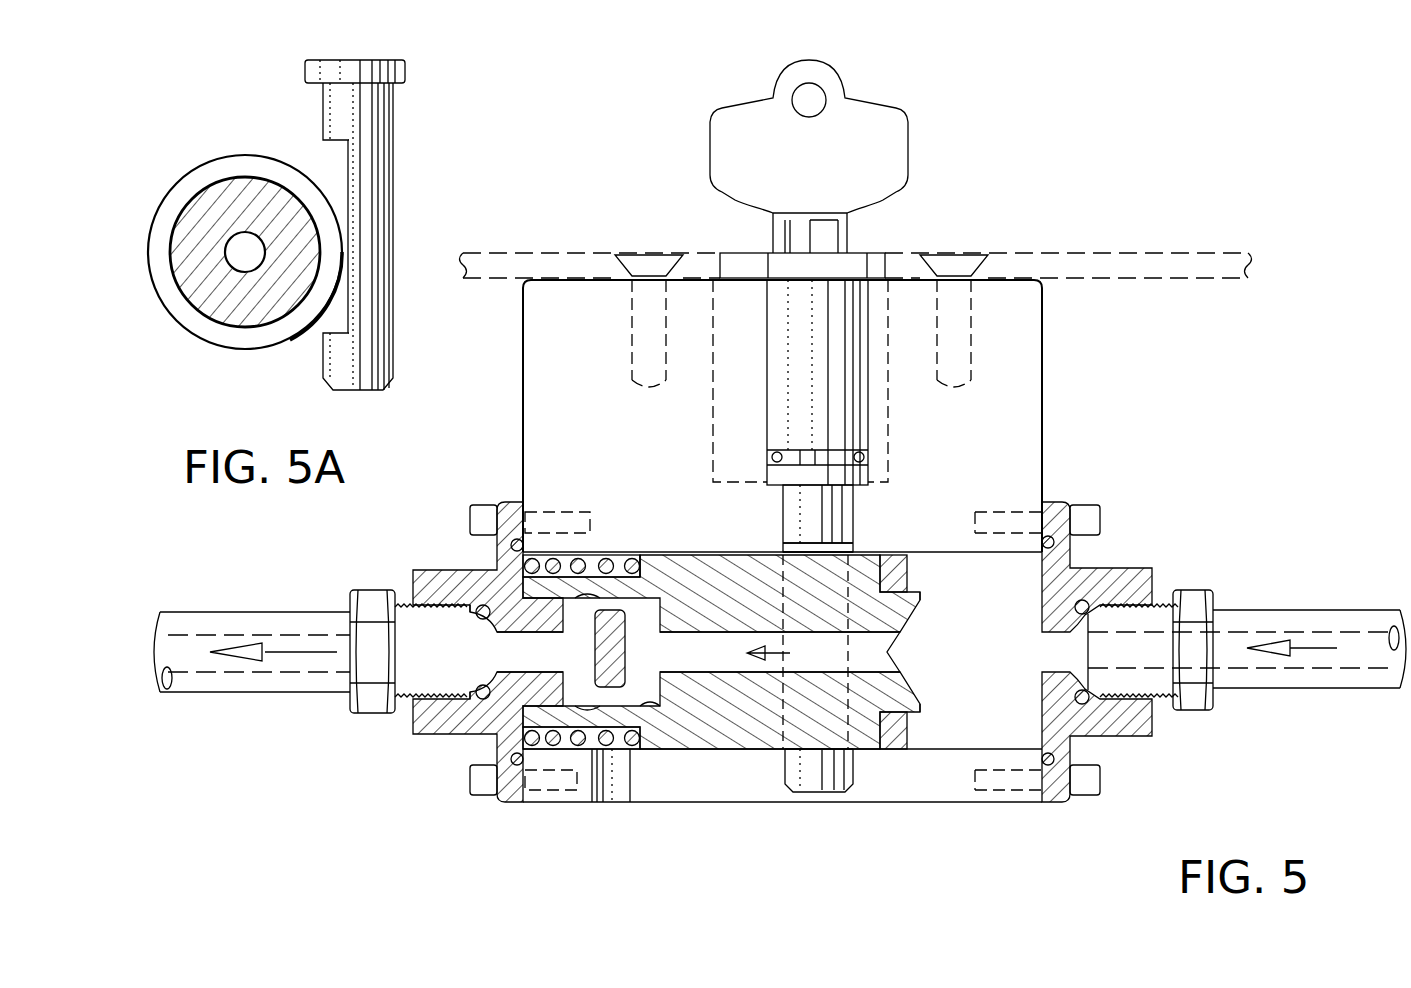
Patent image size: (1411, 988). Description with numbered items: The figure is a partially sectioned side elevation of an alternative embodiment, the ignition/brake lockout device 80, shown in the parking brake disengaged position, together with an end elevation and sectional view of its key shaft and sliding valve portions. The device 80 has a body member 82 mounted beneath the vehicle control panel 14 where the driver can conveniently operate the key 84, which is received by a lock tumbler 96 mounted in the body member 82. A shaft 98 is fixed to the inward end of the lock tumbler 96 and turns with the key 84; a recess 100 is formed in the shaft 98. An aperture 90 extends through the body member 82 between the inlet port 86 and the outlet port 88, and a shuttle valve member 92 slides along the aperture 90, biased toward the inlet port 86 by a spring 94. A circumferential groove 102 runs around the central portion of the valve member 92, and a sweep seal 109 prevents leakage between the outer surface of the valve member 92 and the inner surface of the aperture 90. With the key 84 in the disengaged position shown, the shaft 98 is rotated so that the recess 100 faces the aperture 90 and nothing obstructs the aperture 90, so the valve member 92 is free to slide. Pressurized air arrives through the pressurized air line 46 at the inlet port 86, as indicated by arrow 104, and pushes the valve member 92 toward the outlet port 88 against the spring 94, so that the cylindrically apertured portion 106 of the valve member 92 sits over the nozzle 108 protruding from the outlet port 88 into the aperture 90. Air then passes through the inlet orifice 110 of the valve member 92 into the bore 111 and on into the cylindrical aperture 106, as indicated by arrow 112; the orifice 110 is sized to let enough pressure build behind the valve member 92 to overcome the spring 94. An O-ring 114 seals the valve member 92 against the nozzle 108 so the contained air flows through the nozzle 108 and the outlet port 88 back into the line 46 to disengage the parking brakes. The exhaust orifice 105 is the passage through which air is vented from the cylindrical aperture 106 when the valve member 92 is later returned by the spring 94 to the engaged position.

In FIG. 5, the vehicle control panel 14 is at (1158, 250).
In FIG. 5, the pressurized air line 46 is at (260, 692).
In FIG. 5, the ignition/brake lockout device 80 is at (780, 578).
In FIG. 5, the body member 82 is at (1042, 455).
In FIG. 5, the key 84 is at (898, 100).
In FIG. 5, the inlet port 86 is at (1133, 677).
In FIG. 5, the outlet port 88 is at (440, 617).
In FIG. 5, the aperture 90 is at (782, 680).
In FIG. 5A, the shuttle valve member 92 is at (243, 227).
In FIG. 5, the shuttle valve member 92 is at (769, 672).
In FIG. 5, the spring 94 is at (602, 562).
In FIG. 5, the lock tumbler 96 is at (848, 413).
In FIG. 5A, the shaft 98 is at (358, 225).
In FIG. 5, the shaft 98 is at (803, 502).
In FIG. 5A, the recess 100 is at (345, 333).
In FIG. 5, the recess 100 is at (773, 567).
In FIG. 5A, the circumferential groove 102 is at (232, 166).
In FIG. 5, the circumferential groove 102 is at (725, 737).
In FIG. 5, the arrow 104 is at (1322, 650).
In FIG. 5, the exhaust orifice 105 is at (623, 787).
In FIG. 5, the cylindrically apertured portion 106 is at (640, 693).
In FIG. 5, the nozzle 108 is at (585, 612).
In FIG. 5, the sweep seal 109 is at (917, 558).
In FIG. 5, the inlet orifice 110 is at (922, 608).
In FIG. 5A, the bore 111 is at (244, 264).
In FIG. 5, the bore 111 is at (722, 640).
In FIG. 5, the arrow 112 is at (776, 650).
In FIG. 5, the O-ring 114 is at (520, 598).